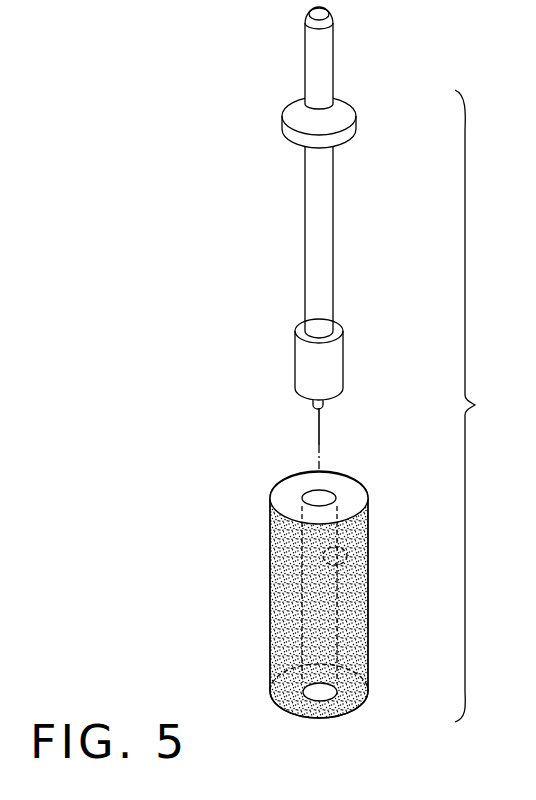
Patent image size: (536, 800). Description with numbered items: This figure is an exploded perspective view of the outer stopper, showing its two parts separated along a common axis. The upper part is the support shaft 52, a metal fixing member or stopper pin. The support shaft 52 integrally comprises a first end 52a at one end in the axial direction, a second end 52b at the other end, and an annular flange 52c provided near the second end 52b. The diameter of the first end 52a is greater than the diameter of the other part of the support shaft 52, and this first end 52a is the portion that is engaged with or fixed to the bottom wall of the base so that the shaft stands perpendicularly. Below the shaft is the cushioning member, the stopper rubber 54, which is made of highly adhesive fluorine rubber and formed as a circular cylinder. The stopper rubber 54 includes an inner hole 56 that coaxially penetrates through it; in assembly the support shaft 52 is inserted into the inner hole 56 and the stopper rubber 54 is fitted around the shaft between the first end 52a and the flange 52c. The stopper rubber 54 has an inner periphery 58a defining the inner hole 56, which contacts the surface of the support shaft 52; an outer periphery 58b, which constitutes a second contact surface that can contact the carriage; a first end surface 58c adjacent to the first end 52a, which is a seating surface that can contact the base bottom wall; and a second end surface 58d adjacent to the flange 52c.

The support shaft 52 is at (319, 253).
The first end 52a is at (330, 368).
The second end 52b is at (334, 22).
The annular flange 52c is at (340, 112).
The stopper rubber 54 is at (315, 591).
The inner hole 56 is at (325, 497).
The inner periphery 58a is at (347, 555).
The outer periphery 58b is at (368, 602).
The first end surface 58c is at (345, 712).
The second end surface 58d is at (288, 492).